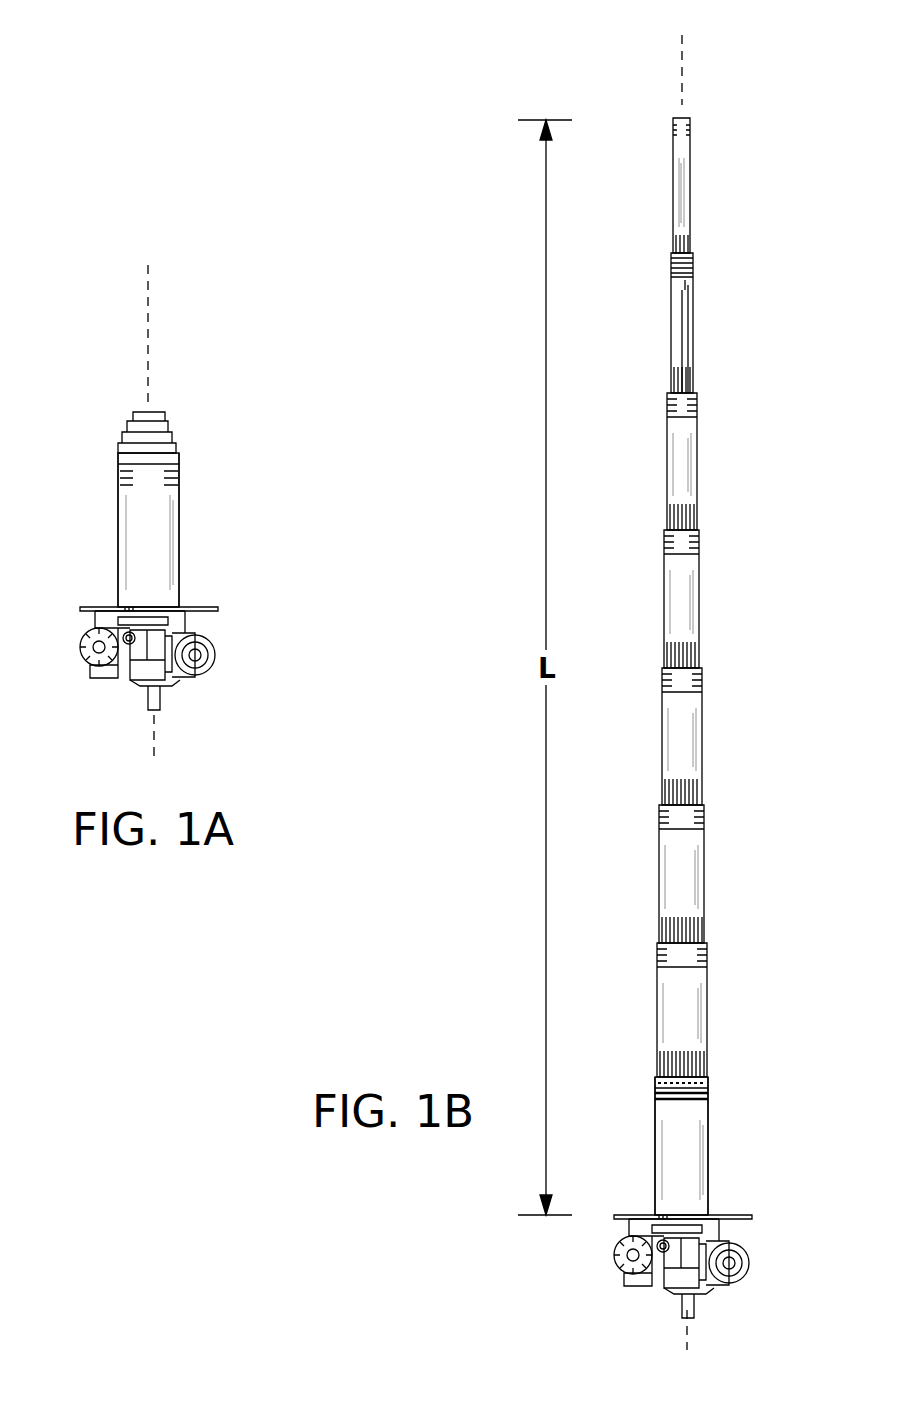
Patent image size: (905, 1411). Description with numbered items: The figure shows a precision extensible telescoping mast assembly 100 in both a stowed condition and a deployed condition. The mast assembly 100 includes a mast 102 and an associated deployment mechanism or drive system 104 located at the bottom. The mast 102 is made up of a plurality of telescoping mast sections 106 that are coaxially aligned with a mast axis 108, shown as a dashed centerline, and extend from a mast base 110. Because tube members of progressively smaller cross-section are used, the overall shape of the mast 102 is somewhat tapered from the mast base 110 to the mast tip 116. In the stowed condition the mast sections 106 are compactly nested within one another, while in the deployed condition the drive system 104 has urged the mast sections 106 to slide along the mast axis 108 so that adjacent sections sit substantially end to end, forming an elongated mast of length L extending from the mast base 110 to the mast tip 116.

In FIG. 1A, the precision extensible telescoping mast assembly 100 is at (82, 445).
In FIG. 1B, the precision extensible telescoping mast assembly 100 is at (495, 335).
In FIG. 1A, the mast 102 is at (232, 457).
In FIG. 1B, the mast 102 is at (765, 446).
In FIG. 1A, the drive system 104 is at (260, 638).
In FIG. 1B, the drive system 104 is at (766, 1236).
In FIG. 1B, the mast section 106 is at (696, 593).
In FIG. 1A, the mast axis 108 is at (148, 307).
In FIG. 1B, the mast axis 108 is at (682, 60).
In FIG. 1A, the mast base 110 is at (173, 532).
In FIG. 1B, the mast base 110 is at (702, 1150).
In FIG. 1B, the mast tip 116 is at (690, 125).